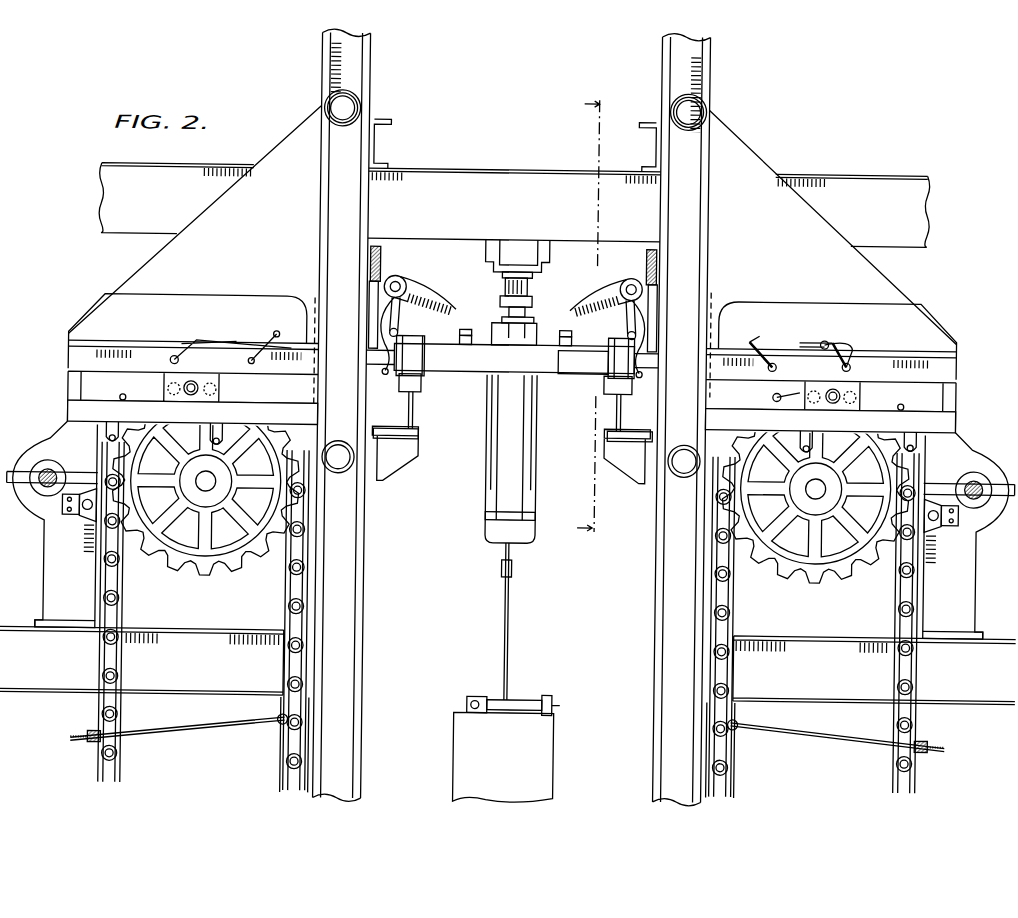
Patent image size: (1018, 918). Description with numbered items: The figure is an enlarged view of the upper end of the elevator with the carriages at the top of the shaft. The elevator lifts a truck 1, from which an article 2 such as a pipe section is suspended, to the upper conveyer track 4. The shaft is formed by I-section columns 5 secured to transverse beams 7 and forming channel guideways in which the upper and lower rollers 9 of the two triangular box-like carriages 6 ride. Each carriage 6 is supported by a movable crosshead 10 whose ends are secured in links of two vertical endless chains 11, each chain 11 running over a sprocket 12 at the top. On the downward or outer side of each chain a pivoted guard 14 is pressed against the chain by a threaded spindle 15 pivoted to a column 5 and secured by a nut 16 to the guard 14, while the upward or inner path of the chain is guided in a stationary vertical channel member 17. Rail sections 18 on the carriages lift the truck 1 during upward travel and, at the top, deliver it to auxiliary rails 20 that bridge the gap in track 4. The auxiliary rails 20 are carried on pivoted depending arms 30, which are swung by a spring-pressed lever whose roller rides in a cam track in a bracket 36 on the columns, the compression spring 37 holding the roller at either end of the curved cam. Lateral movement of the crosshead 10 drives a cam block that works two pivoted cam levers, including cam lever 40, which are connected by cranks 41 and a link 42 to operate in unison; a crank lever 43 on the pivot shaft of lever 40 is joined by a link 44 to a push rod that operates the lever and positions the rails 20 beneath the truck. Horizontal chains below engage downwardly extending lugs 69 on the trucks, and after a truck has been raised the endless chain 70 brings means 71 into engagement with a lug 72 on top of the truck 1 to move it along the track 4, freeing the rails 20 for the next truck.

The truck 1 is at (537, 383).
The article 2 is at (557, 755).
The conveyer track 4 is at (438, 410).
The column 5 is at (366, 562).
The carriage 6 is at (132, 277).
The transverse beam 7 is at (428, 168).
The roller 9 is at (356, 105).
The crosshead 10 is at (165, 393).
The endless chain 11 is at (292, 658).
The sprocket 12 is at (203, 580).
The guard 14 is at (99, 710).
The threaded spindle 15 is at (240, 731).
The nut 16 is at (88, 749).
The channel member 17 is at (284, 758).
The rail section 18 is at (430, 366).
The auxiliary rail 20 is at (368, 375).
The depending arm 30 is at (367, 322).
The bracket 36 is at (421, 298).
The compression spring 37 is at (453, 308).
The cam lever 40 is at (852, 342).
The crank 41 is at (760, 356).
The link 42 is at (780, 380).
The crank lever 43 is at (825, 338).
The link 44 is at (772, 341).
The lug 69 is at (430, 378).
The endless chain 70 is at (530, 312).
The engaging means 71 is at (478, 328).
The lug 72 is at (458, 340).